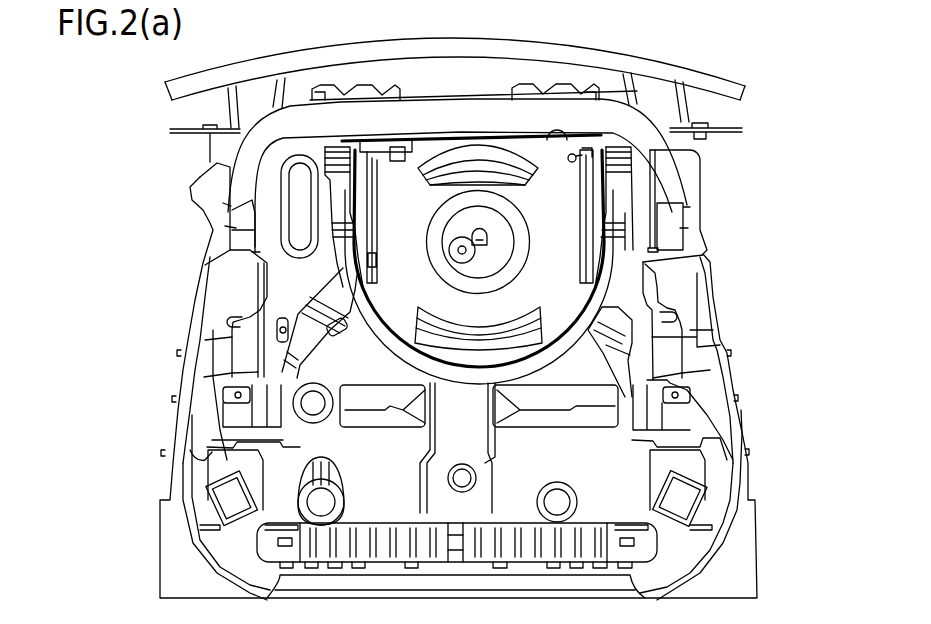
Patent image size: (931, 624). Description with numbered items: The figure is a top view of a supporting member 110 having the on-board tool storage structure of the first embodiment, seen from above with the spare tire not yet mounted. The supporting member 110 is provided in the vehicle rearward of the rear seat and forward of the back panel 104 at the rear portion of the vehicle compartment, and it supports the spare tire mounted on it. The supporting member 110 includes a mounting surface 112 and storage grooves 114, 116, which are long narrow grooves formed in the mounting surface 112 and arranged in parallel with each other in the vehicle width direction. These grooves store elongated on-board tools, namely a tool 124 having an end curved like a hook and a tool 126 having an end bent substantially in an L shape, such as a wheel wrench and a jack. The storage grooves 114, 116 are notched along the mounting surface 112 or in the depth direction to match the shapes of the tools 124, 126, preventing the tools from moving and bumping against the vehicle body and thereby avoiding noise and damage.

The back panel 104 is at (302, 120).
The supporting member 110 is at (572, 328).
The mounting surface 112 is at (557, 197).
The storage groove 114 is at (577, 153).
The storage groove 116 is at (410, 142).
The tool 124 is at (605, 192).
The tool 126 is at (372, 166).